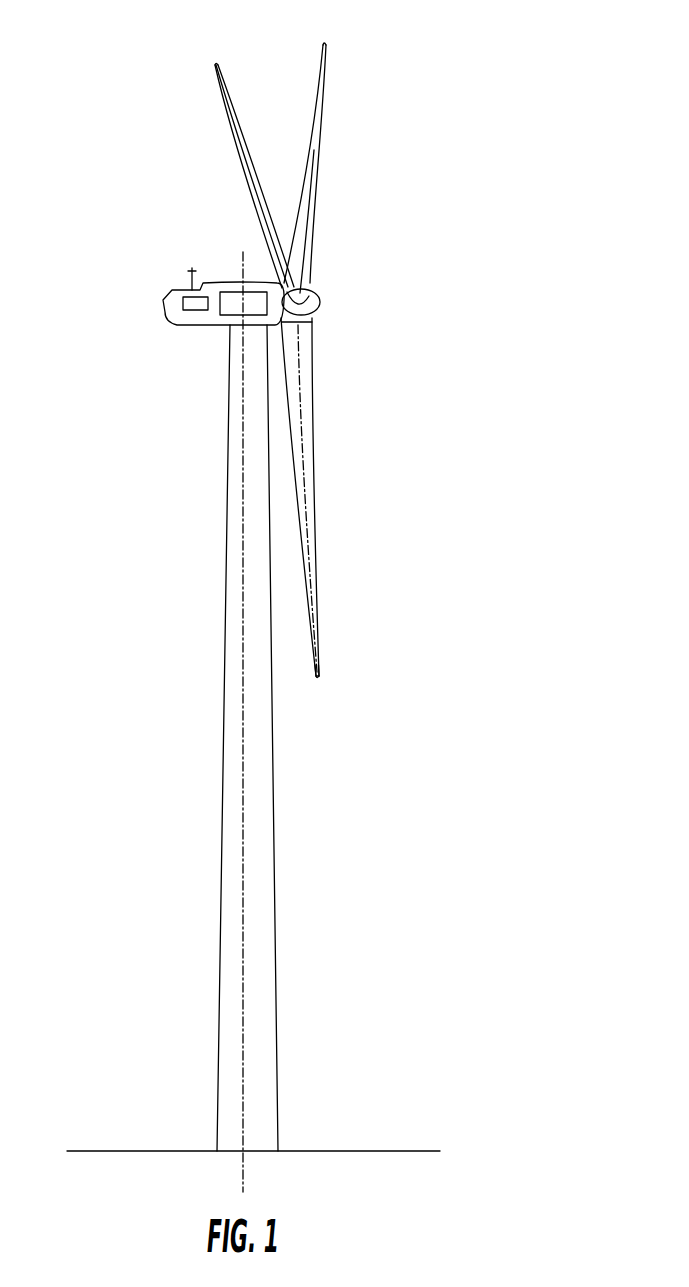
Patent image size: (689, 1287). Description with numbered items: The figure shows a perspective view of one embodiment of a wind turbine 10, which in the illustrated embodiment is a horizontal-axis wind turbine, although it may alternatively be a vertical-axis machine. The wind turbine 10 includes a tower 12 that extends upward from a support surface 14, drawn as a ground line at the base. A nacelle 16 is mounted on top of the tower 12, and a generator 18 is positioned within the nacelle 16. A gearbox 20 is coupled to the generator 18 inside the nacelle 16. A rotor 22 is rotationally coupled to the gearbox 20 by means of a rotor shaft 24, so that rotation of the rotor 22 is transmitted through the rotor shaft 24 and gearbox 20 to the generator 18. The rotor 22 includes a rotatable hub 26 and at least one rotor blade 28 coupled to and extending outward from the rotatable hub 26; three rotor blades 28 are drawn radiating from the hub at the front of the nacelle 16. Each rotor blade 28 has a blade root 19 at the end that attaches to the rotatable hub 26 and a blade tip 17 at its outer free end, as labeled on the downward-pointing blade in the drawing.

The wind turbine 10 is at (461, 94).
The tower 12 is at (221, 862).
The support surface 14 is at (142, 1150).
The nacelle 16 is at (182, 328).
The blade tip 17 is at (318, 677).
The generator 18 is at (188, 292).
The blade root 19 is at (312, 338).
The gearbox 20 is at (227, 282).
The rotor 22 is at (329, 276).
The rotor shaft 24 is at (277, 305).
The rotatable hub 26 is at (314, 310).
The rotor blade 28 is at (232, 131).